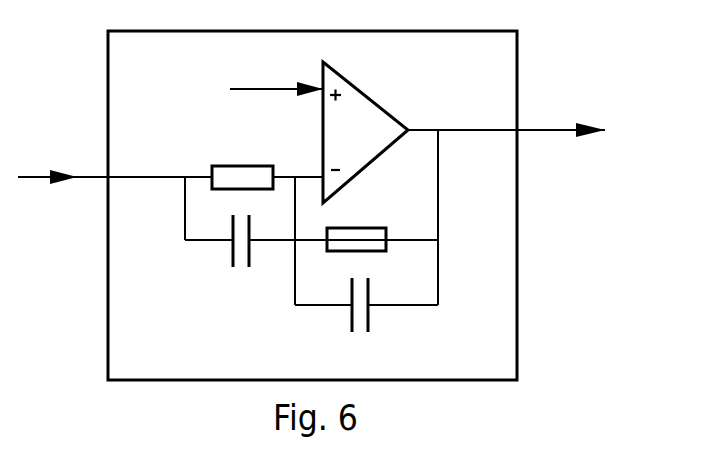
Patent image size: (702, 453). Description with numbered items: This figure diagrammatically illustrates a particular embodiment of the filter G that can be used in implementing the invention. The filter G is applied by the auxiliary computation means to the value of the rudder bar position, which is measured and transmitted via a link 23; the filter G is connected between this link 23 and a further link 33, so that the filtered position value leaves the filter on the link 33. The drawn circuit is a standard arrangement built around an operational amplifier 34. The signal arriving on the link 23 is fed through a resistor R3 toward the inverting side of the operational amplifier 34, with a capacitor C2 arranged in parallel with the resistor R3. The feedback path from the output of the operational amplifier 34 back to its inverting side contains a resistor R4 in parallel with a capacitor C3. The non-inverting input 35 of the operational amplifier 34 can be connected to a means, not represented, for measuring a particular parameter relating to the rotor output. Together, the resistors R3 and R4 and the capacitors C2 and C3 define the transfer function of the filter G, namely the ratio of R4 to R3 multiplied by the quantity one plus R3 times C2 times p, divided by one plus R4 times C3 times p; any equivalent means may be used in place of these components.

The link 23 is at (32, 177).
The non-inverting input 35 is at (268, 88).
The operational amplifier 34 is at (367, 94).
The link 33 is at (551, 131).
The filter G is at (517, 315).
The resistor R3 is at (242, 164).
The resistor R4 is at (356, 226).
The capacitor C2 is at (311, 260).
The capacitor C3 is at (366, 322).